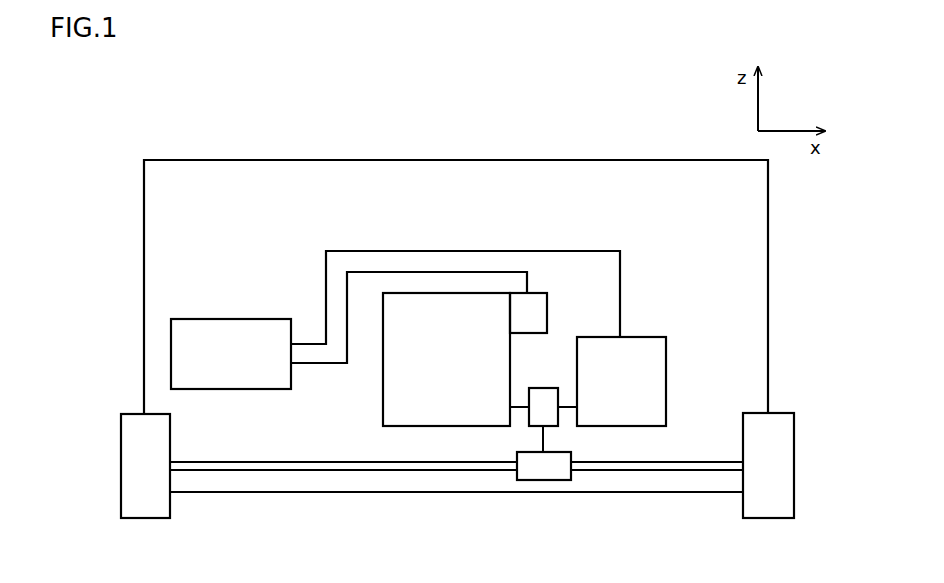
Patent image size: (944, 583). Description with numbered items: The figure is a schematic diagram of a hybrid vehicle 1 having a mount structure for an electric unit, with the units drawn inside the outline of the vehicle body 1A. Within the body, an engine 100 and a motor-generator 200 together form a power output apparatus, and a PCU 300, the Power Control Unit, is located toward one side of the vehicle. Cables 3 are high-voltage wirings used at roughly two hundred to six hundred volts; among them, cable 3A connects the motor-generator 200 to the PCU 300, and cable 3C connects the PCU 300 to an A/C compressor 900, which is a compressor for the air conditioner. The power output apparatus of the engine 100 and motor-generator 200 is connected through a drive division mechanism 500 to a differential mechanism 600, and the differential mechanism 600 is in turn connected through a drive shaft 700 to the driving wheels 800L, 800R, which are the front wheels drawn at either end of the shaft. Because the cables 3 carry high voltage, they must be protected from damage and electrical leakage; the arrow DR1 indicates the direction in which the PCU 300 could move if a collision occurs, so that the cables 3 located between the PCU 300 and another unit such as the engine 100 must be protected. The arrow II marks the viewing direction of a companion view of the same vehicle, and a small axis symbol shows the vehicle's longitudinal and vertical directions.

The hybrid vehicle 1 is at (176, 135).
The vehicle body 1A is at (768, 260).
The cables 3 is at (455, 222).
The cable 3A is at (368, 251).
The cable 3C is at (422, 272).
The engine 100 is at (428, 426).
The motor-generator 200 is at (620, 426).
The PCU (Power Control Unit) 300 is at (240, 389).
The drive division mechanism 500 is at (529, 420).
The differential mechanism 600 is at (543, 480).
The drive shaft 700 is at (325, 470).
The driving wheel 800R is at (146, 518).
The driving wheel 800L is at (770, 518).
The A/C compressor 900 is at (547, 312).
The arrow DR1 is at (121, 352).
The arrow II is at (457, 97).